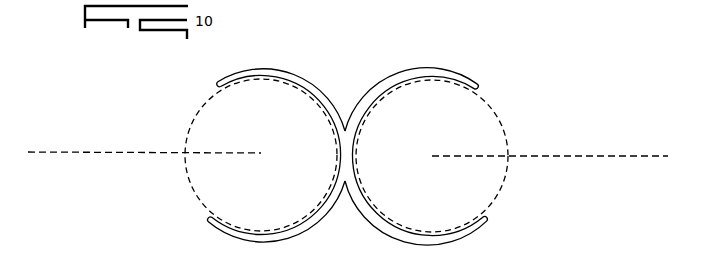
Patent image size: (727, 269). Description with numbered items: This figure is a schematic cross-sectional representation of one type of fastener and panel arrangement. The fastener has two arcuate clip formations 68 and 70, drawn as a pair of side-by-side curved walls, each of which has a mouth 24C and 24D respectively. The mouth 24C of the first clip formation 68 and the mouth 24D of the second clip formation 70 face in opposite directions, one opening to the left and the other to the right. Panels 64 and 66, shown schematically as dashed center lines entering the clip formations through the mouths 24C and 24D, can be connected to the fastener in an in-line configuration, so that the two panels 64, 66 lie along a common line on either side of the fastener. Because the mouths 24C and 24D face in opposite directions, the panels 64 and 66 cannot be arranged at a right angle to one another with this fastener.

The mouth 24C is at (179, 129).
The mouth 24D is at (493, 96).
The arcuate clip formation 68 is at (259, 71).
The arcuate clip formation 70 is at (433, 71).
The panel 64 is at (82, 163).
The panel 66 is at (580, 166).